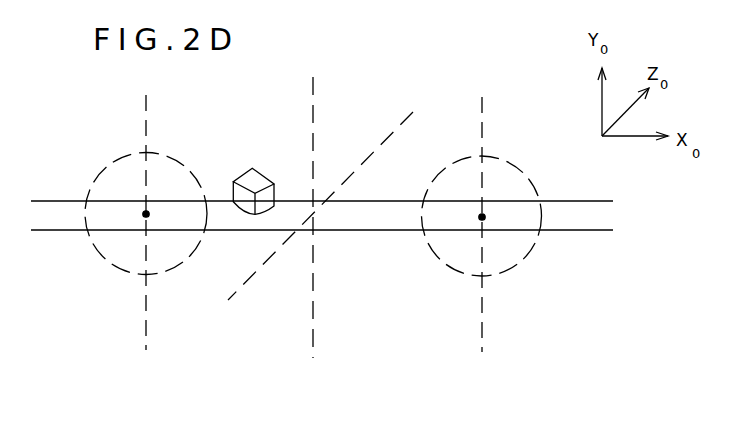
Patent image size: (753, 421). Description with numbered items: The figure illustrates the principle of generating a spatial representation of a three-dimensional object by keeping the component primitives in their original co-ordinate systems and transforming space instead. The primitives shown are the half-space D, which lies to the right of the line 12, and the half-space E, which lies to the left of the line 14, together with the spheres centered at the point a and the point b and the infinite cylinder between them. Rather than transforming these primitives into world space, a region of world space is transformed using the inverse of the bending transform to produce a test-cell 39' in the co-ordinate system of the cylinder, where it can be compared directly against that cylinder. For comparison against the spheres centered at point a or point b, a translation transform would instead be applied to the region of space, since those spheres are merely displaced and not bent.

The test-cell 39' is at (266, 134).
The line 12 is at (145, 307).
The line 14 is at (480, 313).
The point a is at (146, 214).
The point b is at (482, 217).
The half-space D is at (181, 118).
The half-space E is at (454, 118).